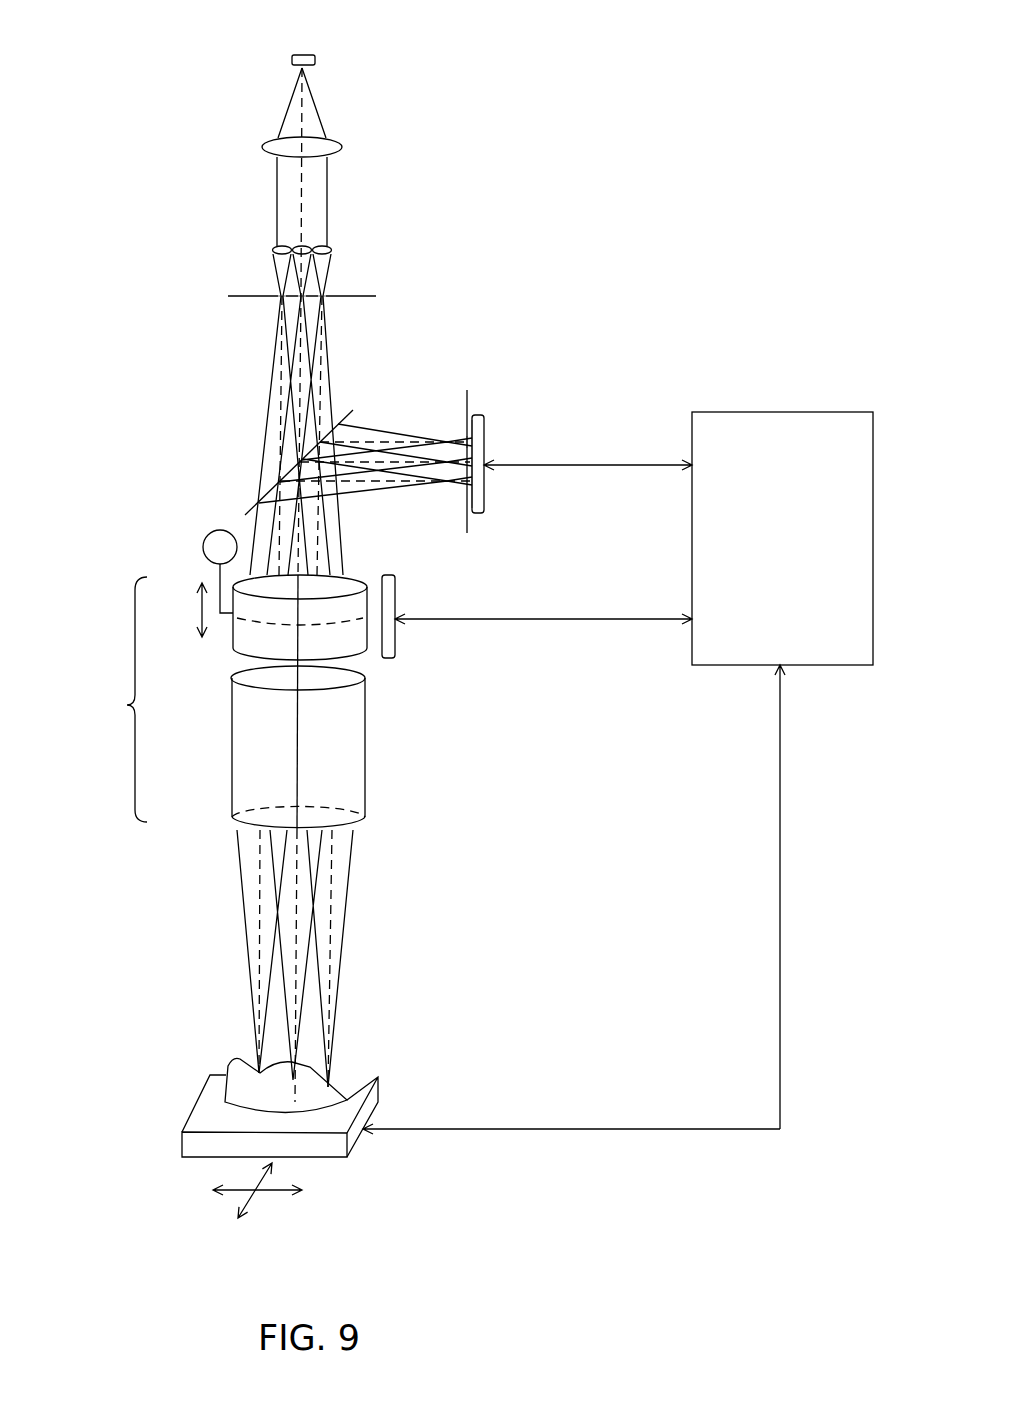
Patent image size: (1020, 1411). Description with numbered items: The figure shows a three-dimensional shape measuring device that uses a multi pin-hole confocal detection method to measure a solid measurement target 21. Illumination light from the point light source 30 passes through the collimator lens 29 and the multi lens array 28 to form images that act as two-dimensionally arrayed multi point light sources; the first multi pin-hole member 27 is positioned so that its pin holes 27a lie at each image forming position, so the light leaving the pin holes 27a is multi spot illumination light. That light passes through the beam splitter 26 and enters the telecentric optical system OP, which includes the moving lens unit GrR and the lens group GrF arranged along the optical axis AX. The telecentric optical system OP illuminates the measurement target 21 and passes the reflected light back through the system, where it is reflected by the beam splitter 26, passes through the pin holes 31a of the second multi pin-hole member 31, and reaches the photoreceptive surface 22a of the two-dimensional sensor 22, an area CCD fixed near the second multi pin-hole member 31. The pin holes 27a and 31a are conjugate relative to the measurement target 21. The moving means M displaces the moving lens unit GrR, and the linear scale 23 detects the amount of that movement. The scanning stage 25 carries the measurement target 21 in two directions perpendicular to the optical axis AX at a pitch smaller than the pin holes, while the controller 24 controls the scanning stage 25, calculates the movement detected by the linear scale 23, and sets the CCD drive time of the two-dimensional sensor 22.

The light source 30 is at (315, 55).
The collimator lens 29 is at (330, 147).
The multi lens array 28 is at (327, 248).
The first multi pin-hole member 27 is at (343, 298).
The pin holes 27a is at (260, 309).
The beam splitter 26 is at (260, 487).
The second multi pin-hole member 31 is at (462, 422).
The pin holes 31a is at (449, 492).
The two-dimensional sensor 22 is at (483, 485).
The photoreceptive surface 22a is at (477, 415).
The controller 24 is at (739, 412).
The linear scale 23 is at (395, 645).
The measurement target 21 is at (268, 1080).
The scanning stage 25 is at (325, 1158).
The telecentric optical system OP is at (112, 699).
The moving lens unit GrR is at (246, 619).
The front lens group GrF is at (340, 753).
The optical axis AX is at (298, 728).
The moving means M is at (217, 583).